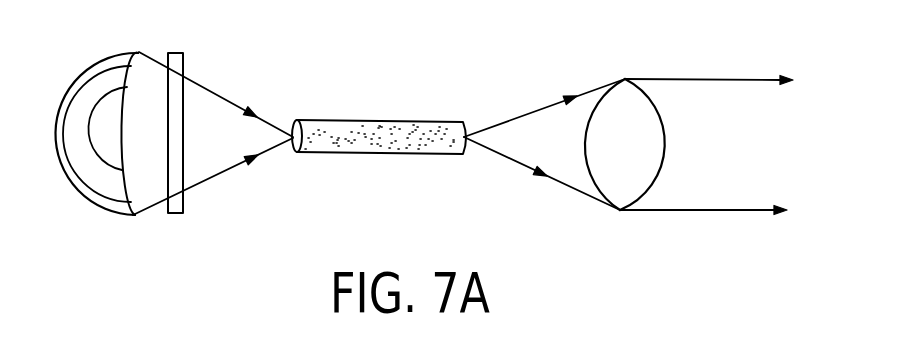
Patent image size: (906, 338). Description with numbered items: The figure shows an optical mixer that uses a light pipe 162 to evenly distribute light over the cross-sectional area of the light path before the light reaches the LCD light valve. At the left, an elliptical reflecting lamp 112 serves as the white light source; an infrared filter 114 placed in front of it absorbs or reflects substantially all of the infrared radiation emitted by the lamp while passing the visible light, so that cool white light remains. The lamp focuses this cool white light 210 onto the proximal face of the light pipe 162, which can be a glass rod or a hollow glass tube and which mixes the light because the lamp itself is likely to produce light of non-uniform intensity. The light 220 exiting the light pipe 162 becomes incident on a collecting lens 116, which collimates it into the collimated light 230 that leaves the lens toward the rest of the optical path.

The elliptical reflecting lamp 112 is at (75, 92).
The infrared filter 114 is at (173, 213).
The converging light beam 210 is at (312, 33).
The light pipe 162 is at (375, 154).
The light 220 is at (562, 37).
The collecting lens 116 is at (758, 133).
The collimated light 230 is at (807, 12).